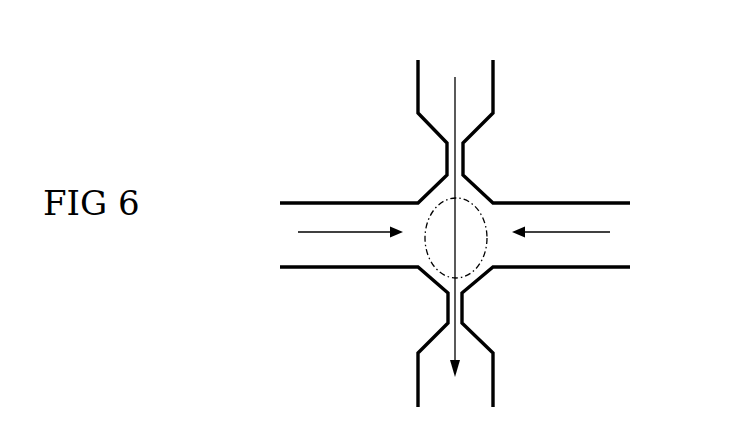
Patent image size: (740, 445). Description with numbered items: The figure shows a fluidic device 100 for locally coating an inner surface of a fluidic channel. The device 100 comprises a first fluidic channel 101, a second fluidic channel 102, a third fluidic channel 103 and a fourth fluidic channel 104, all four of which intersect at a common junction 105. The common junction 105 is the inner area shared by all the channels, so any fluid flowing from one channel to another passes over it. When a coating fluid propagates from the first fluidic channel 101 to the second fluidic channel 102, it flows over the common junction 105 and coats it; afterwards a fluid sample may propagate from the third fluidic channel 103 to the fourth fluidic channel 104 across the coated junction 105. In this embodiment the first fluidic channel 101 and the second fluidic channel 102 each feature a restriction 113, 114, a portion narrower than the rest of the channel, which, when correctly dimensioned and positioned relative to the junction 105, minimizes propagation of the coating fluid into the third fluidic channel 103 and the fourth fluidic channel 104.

The fluidic device 100 is at (338, 75).
The first fluidic channel 101 is at (497, 113).
The second fluidic channel 102 is at (493, 393).
The third fluidic channel 103 is at (293, 202).
The fourth fluidic channel 104 is at (617, 202).
The common junction 105 is at (482, 250).
The restriction 113 is at (477, 160).
The restriction 114 is at (478, 310).